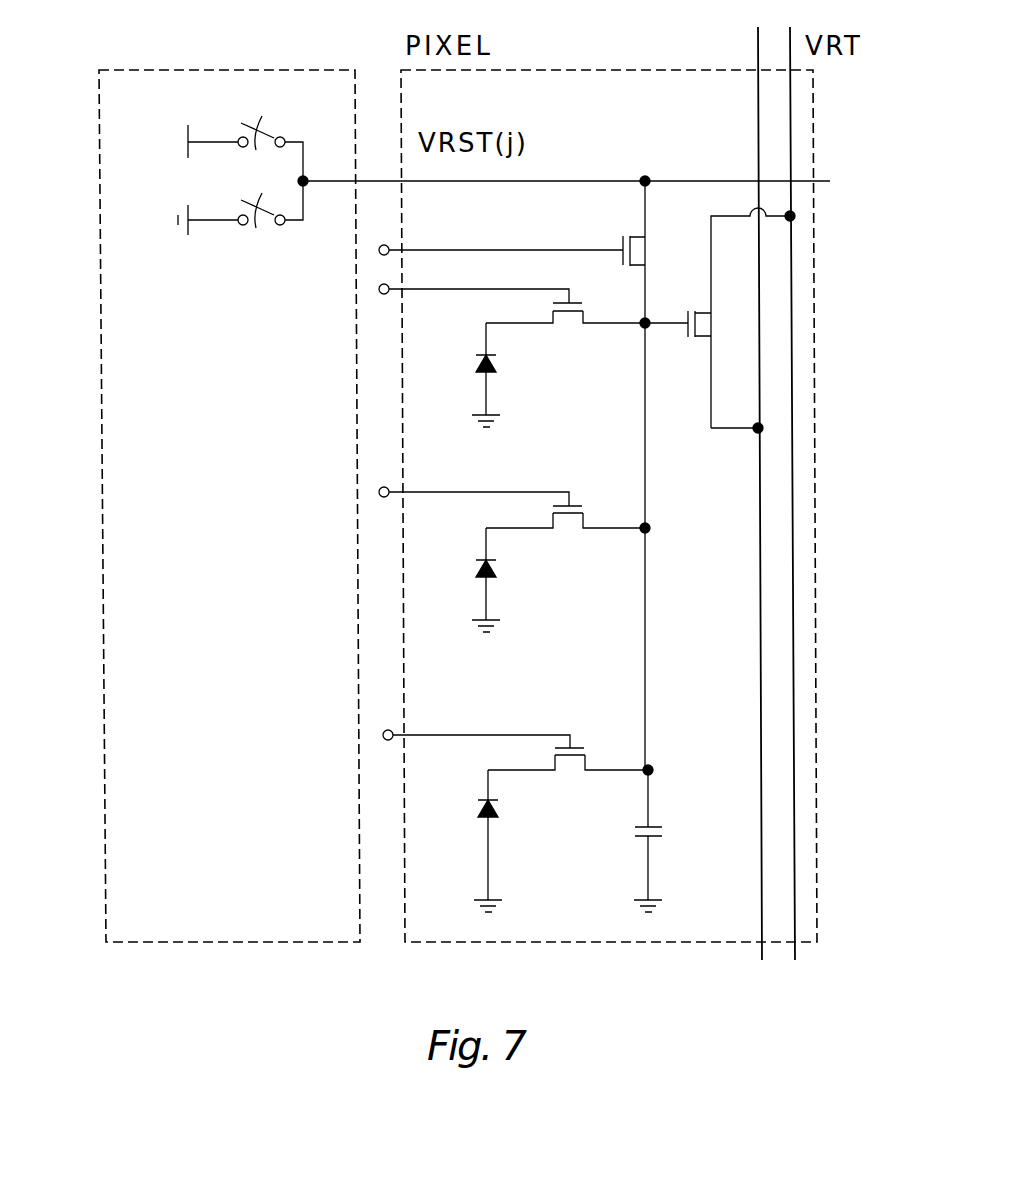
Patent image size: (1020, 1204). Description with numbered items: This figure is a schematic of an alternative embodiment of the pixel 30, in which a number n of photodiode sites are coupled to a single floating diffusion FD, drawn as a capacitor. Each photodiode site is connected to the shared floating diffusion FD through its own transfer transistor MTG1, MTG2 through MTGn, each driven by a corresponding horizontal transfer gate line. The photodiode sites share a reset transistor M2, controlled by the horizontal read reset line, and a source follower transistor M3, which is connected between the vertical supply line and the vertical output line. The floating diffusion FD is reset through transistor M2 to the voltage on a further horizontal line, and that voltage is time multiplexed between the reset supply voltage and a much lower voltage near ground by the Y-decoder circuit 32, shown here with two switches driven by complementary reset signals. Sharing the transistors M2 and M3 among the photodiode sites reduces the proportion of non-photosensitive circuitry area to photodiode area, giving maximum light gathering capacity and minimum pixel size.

The pixel 30 is at (637, 574).
The Y-decoder circuit 32 is at (118, 470).
The reset transistor M2 is at (535, 242).
The source follower transistor M3 is at (717, 335).
The transfer gate transistor MTG1 is at (512, 342).
The transfer gate transistor MTG2 is at (514, 544).
The transfer gate transistor MTGn is at (518, 805).
The floating diffusion FD is at (630, 841).